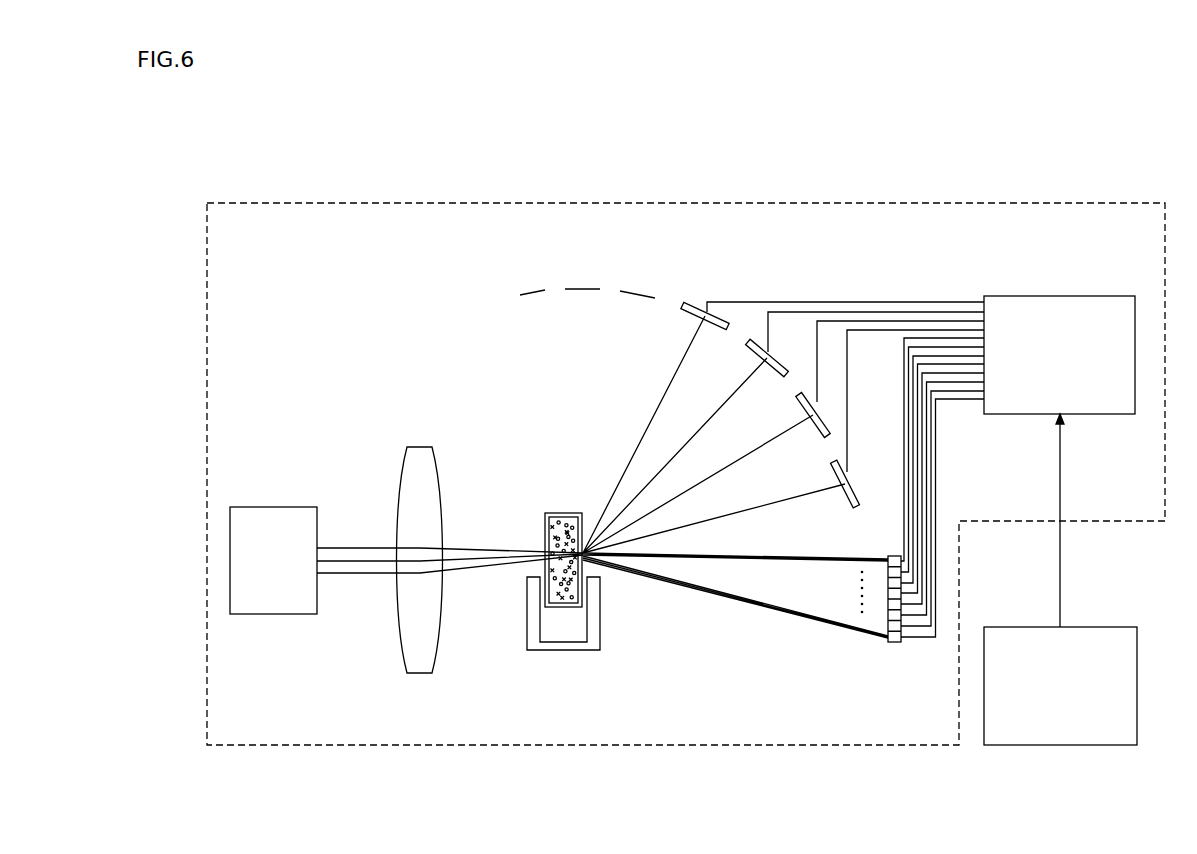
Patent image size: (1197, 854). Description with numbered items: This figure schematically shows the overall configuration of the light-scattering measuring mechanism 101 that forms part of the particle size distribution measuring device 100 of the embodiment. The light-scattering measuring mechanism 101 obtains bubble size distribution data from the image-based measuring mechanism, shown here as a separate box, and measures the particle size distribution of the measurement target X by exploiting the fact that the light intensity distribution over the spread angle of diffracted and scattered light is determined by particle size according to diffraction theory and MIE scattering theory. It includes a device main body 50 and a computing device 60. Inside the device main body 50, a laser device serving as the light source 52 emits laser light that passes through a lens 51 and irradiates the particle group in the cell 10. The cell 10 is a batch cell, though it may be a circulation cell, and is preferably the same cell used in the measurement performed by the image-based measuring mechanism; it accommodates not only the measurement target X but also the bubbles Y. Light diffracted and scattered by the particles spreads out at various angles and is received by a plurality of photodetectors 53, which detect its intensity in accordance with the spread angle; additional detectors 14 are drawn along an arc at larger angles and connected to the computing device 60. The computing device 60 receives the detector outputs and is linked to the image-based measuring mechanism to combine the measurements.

The particle size distribution measuring device 100 is at (217, 175).
The light-scattering measuring mechanism 101 is at (380, 200).
The device main body 50 is at (370, 340).
The light source 52 is at (275, 614).
The lens 51 is at (419, 673).
The cell 10 is at (565, 513).
The measurement target X is at (556, 530).
The bubbles Y is at (552, 585).
The scattered light detectors 14 is at (698, 305).
The photodetectors 53 is at (893, 644).
The computing device 60 is at (1025, 296).